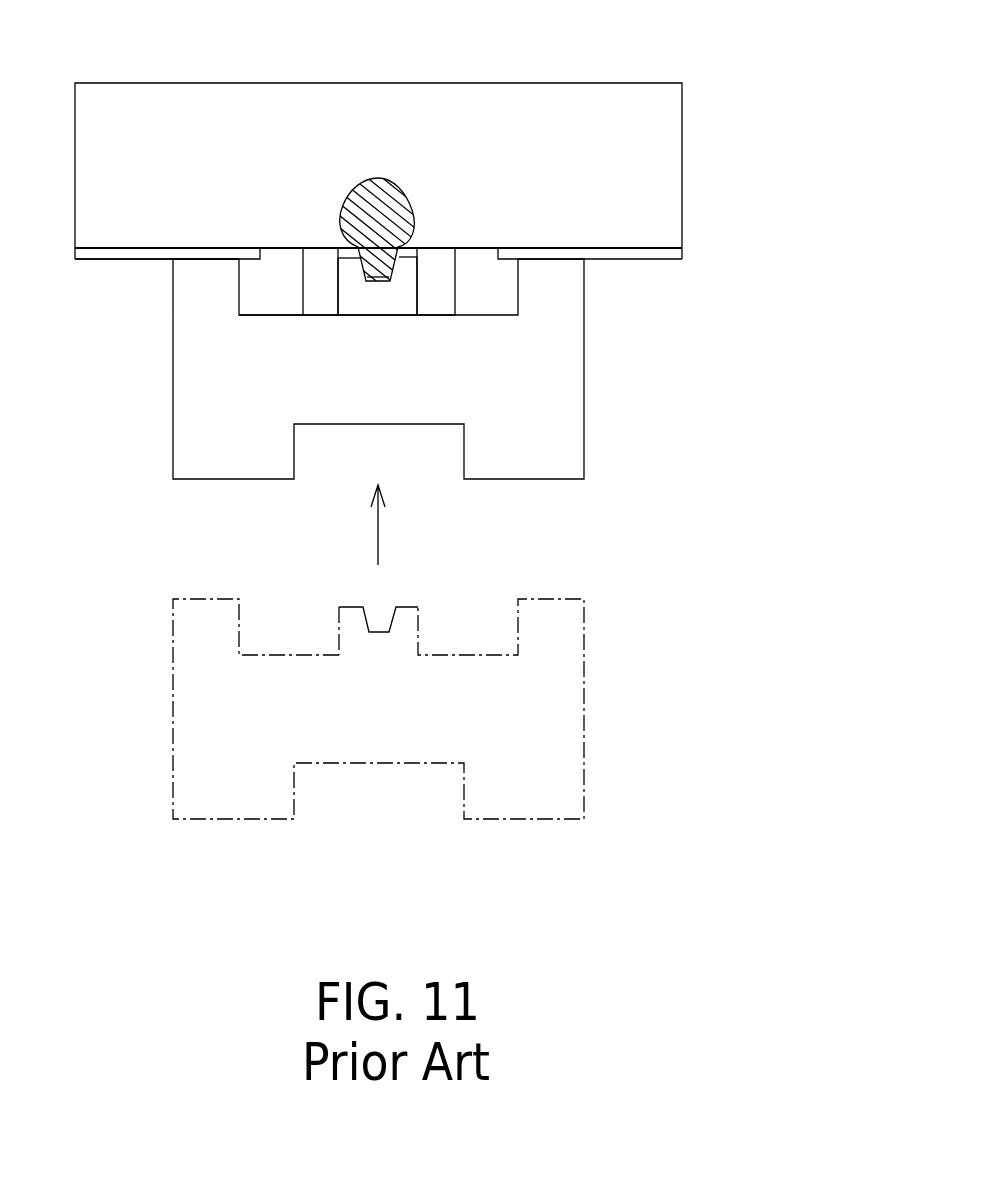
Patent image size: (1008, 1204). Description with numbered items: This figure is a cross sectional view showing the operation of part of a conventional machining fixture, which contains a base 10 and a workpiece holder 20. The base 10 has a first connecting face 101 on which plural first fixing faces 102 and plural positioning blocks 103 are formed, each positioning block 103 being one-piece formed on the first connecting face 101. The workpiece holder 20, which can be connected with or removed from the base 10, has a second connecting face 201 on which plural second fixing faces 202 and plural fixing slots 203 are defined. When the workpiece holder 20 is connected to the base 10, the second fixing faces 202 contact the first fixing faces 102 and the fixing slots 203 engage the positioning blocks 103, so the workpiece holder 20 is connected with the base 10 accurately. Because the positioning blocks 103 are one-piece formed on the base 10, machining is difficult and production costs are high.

The base 10 is at (687, 143).
The workpiece holder 20 is at (585, 418).
The first connecting face 101 is at (108, 249).
The first fixing face 102 is at (145, 259).
The positioning block 103 is at (380, 267).
The second connecting face 201 is at (277, 315).
The second fixing face 202 is at (204, 255).
The fixing slot 203 is at (365, 268).